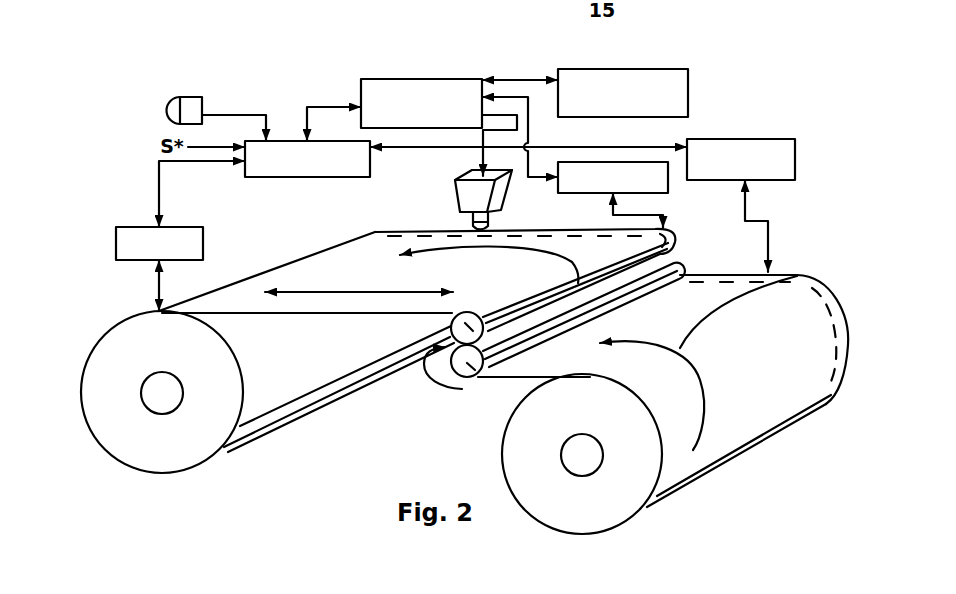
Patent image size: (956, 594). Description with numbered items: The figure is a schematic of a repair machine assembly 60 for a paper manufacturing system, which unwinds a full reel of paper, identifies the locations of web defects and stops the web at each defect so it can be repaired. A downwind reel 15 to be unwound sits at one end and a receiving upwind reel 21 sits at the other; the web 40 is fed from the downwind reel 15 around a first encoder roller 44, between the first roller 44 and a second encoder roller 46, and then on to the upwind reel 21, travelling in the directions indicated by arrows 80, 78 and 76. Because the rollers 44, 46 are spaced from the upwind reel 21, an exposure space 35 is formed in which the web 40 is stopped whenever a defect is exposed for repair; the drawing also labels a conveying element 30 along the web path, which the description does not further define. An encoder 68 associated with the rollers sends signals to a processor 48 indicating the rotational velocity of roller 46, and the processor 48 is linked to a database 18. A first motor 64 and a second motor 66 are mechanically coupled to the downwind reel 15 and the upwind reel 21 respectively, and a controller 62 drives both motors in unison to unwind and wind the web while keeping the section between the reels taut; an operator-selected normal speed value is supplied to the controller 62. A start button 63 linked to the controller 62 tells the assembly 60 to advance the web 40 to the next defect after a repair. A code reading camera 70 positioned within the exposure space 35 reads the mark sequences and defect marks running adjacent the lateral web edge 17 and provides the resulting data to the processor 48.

The downwind reel 15 is at (618, 488).
The lateral web edge 17 is at (790, 276).
The database 18 is at (665, 69).
The upwind reel 21 is at (118, 362).
The conveyor belt 30 is at (716, 267).
The exposure space 35 is at (313, 292).
The web 40 is at (360, 313).
The first encoder roller 44 is at (477, 378).
The second encoder roller 46 is at (497, 372).
The processor 48 is at (415, 79).
The second assembly 60 is at (152, 82).
The controller 62 is at (293, 141).
The start button 63 is at (167, 115).
The first motor 64 is at (738, 139).
The second motor 66 is at (203, 237).
The encoder 68 is at (643, 162).
The code reading camera 70 is at (505, 196).
The web travel direction arrow 76 is at (372, 232).
The web travel direction arrow 78 is at (423, 376).
The web travel direction arrow 80 is at (806, 282).